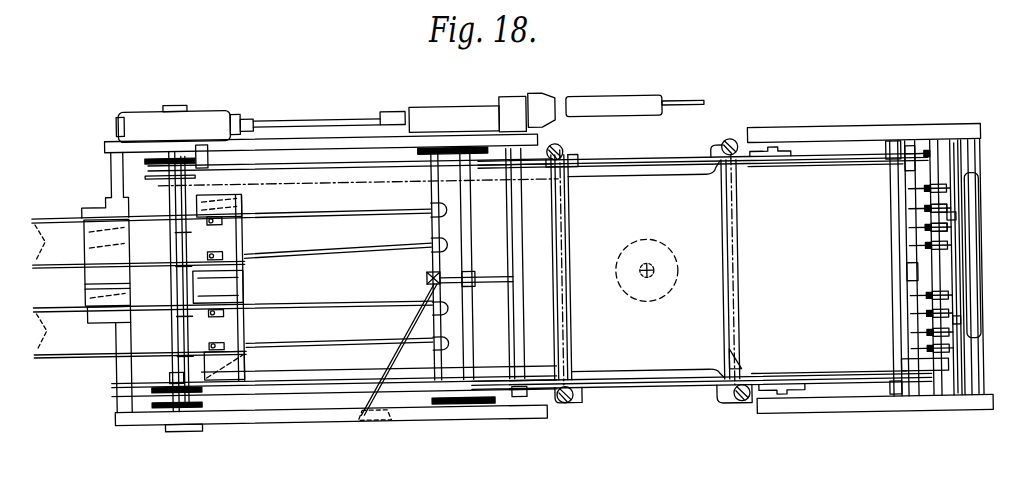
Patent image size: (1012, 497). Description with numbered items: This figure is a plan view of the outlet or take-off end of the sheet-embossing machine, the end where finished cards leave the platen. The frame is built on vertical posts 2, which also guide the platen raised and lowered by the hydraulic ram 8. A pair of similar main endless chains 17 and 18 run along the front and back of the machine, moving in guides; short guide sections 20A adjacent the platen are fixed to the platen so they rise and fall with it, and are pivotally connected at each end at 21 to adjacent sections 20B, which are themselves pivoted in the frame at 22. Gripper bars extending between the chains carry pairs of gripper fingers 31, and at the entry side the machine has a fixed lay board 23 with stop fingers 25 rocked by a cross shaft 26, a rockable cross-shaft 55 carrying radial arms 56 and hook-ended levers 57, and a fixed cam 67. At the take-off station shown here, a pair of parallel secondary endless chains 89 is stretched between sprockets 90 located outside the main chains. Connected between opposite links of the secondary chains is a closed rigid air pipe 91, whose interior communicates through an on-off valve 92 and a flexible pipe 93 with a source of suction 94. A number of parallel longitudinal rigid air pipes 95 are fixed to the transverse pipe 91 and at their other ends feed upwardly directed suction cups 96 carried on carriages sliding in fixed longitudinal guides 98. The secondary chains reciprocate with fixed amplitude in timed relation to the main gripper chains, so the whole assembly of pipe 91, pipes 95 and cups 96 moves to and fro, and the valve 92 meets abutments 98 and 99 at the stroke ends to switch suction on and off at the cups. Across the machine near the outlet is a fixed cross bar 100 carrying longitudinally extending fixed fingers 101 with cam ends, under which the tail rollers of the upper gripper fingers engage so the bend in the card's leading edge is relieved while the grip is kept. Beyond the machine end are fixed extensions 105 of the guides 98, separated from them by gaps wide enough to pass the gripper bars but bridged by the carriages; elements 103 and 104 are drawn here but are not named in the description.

The vertical posts 2 is at (567, 149).
The hydraulic ram 8 is at (647, 266).
The endless chain 17 is at (609, 384).
The endless chain 18 is at (643, 142).
The short sections of guides 20A is at (675, 162).
The adjacent sections 20B is at (843, 163).
The pivotal connection 21 is at (776, 152).
The pivot 22 is at (900, 150).
The lay board 23 is at (976, 298).
The stop fingers 25 is at (955, 230).
The cross shaft 26 is at (960, 351).
The gripper fingers 31 is at (954, 198).
The rockable cross-shaft 55 is at (912, 263).
The radially extending arms 56 is at (932, 236).
The hook-ended lever 57 is at (918, 178).
The fixed cam 67 is at (930, 370).
The secondary endless chains 89 is at (303, 148).
The sprockets 90 is at (147, 153).
The closed rigid air pipe 91 is at (432, 264).
The on-off valve 92 is at (440, 270).
The flexible pipe 93 is at (398, 350).
The source of suction 94 is at (377, 413).
The longitudinal rigid air pipes 95 is at (324, 214).
The suction cups 96 is at (232, 283).
The fixed longitudinal guides 98 is at (452, 280).
The abutment 99 is at (247, 276).
The fixed cross bar 100 is at (182, 223).
The fixed fingers 101 is at (230, 232).
The block 103 is at (168, 378).
The block 104 is at (240, 360).
The extensions of the guides 105 is at (76, 207).